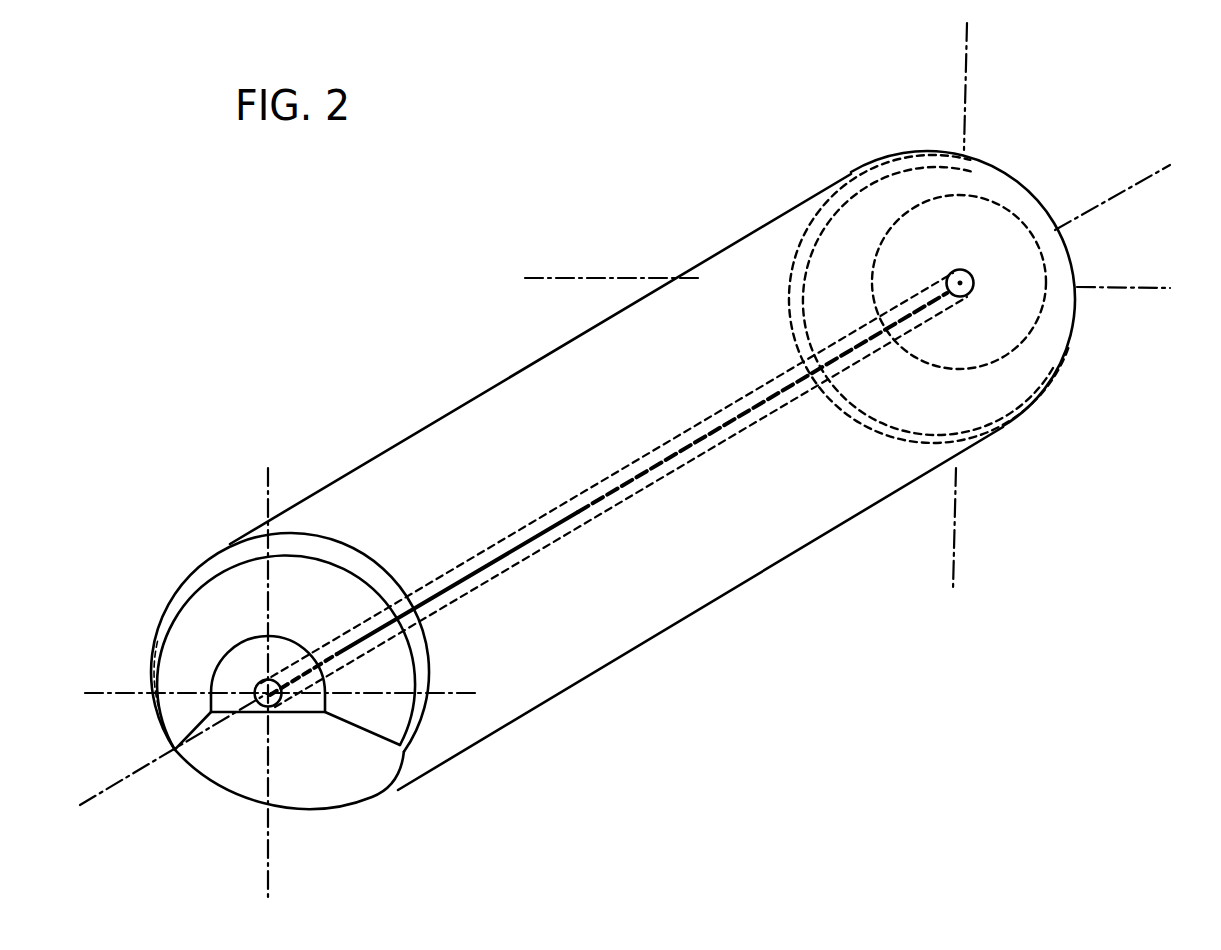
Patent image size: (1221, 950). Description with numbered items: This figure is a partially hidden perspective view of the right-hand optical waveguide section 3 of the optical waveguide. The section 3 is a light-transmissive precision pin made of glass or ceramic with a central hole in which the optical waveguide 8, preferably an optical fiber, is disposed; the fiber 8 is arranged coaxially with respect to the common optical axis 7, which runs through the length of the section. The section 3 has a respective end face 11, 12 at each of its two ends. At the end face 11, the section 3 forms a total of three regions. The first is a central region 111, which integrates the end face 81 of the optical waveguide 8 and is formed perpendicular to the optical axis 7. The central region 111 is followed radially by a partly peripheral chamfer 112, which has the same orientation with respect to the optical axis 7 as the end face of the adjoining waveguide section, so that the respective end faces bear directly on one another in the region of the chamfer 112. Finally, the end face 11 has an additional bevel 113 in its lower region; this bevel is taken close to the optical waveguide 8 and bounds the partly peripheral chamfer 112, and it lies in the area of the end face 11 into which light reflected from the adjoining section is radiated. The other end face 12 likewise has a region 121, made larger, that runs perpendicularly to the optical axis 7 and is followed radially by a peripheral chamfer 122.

The optical waveguide section 3 is at (449, 437).
The optical axis 7 is at (1150, 175).
The optical waveguide 8 is at (574, 521).
The end face 11 is at (133, 720).
The end face 12 is at (1000, 148).
The end face of the optical waveguide 81 is at (238, 654).
The central region 111 is at (241, 655).
The partly peripheral chamfer 112 is at (248, 576).
The bevel 113 is at (338, 786).
The region 121 is at (998, 243).
The peripheral chamfer 122 is at (1080, 334).